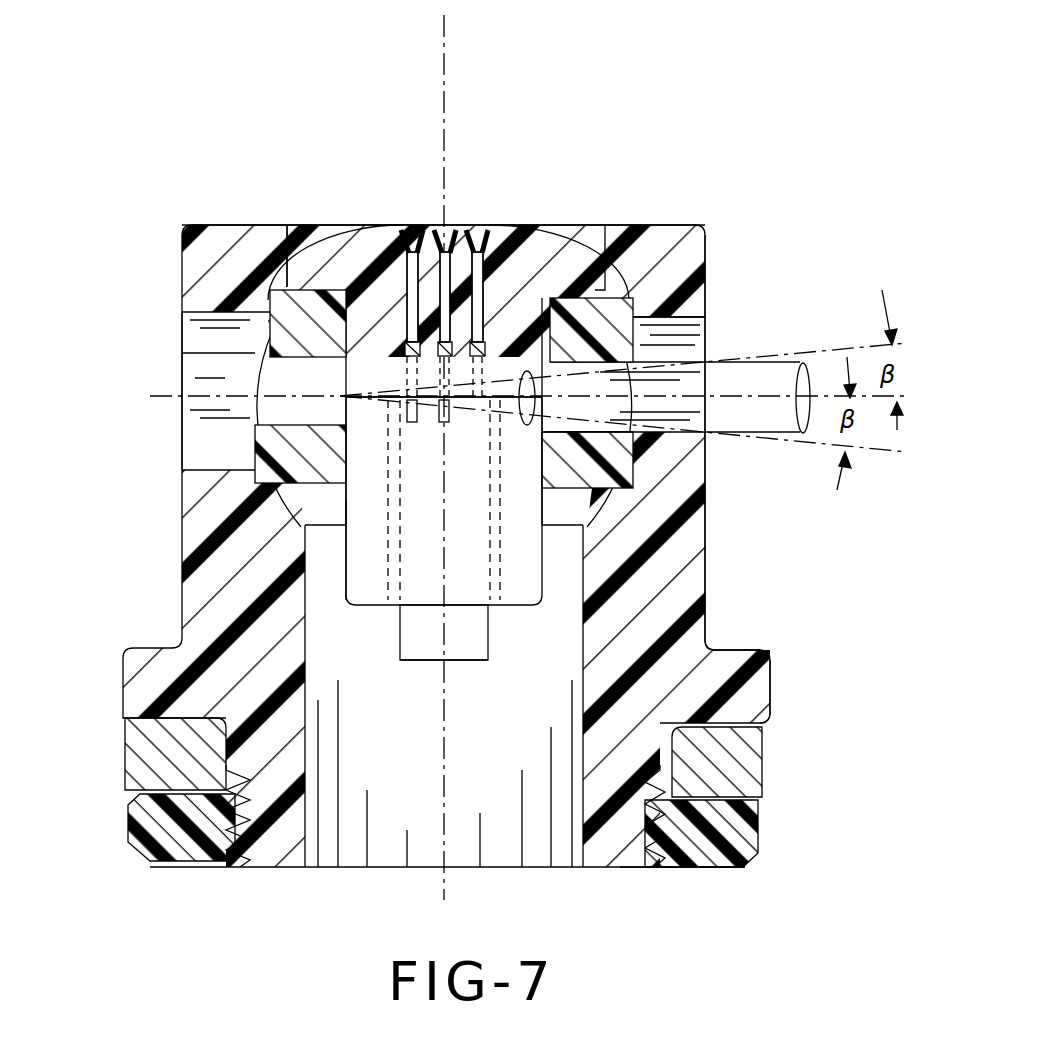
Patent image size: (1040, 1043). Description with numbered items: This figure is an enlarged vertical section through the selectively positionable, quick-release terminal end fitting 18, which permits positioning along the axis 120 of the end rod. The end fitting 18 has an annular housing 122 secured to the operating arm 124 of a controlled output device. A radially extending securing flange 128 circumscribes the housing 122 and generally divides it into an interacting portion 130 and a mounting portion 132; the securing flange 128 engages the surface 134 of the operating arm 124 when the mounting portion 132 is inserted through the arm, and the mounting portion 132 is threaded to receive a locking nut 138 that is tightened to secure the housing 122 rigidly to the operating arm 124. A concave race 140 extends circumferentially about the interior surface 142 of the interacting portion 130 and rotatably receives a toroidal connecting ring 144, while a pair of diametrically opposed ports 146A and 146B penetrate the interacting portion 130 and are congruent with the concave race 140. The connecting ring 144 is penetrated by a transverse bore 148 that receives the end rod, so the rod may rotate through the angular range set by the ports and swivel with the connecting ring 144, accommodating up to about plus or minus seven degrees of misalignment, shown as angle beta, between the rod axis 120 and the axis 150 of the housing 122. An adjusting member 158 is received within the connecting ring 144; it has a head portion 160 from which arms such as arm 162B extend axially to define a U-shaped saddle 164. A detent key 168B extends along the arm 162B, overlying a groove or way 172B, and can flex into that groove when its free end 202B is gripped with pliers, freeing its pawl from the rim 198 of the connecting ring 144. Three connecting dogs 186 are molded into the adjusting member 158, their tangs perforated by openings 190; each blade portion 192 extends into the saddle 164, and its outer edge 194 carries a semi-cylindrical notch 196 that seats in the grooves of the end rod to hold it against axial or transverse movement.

The terminal end fitting 18 is at (318, 112).
The axis of the end rod 120 is at (195, 400).
The annular housing 122 is at (732, 498).
The operating arm 124 is at (738, 747).
The securing flange 128 is at (752, 652).
The interacting portion 130 is at (712, 583).
The mounting portion 132 is at (636, 880).
The surface of the operating arm 134 is at (743, 718).
The locking nut 138 is at (752, 833).
The concave race 140 is at (275, 343).
The interior surface 142 is at (305, 228).
The toroidal connecting ring 144 is at (312, 462).
The port 146A is at (718, 333).
The port 146B is at (185, 448).
The transverse bore 148 is at (592, 432).
The axis of the annular housing 150 is at (444, 888).
The adjusting member 158 is at (562, 226).
The head portion 160 is at (325, 225).
The arm 162B is at (517, 600).
The U-shaped saddle 164 is at (383, 362).
The detent key 168B is at (400, 640).
The groove or way 172B is at (390, 510).
The connecting dogs 186 is at (483, 227).
The openings 190 is at (496, 262).
The blade portion 192 is at (490, 372).
The outer edge 194 is at (446, 420).
The semi-cylindrical notch 196 is at (405, 380).
The rim of the connecting ring 198 is at (567, 432).
The free end of the detent key 202B is at (422, 660).